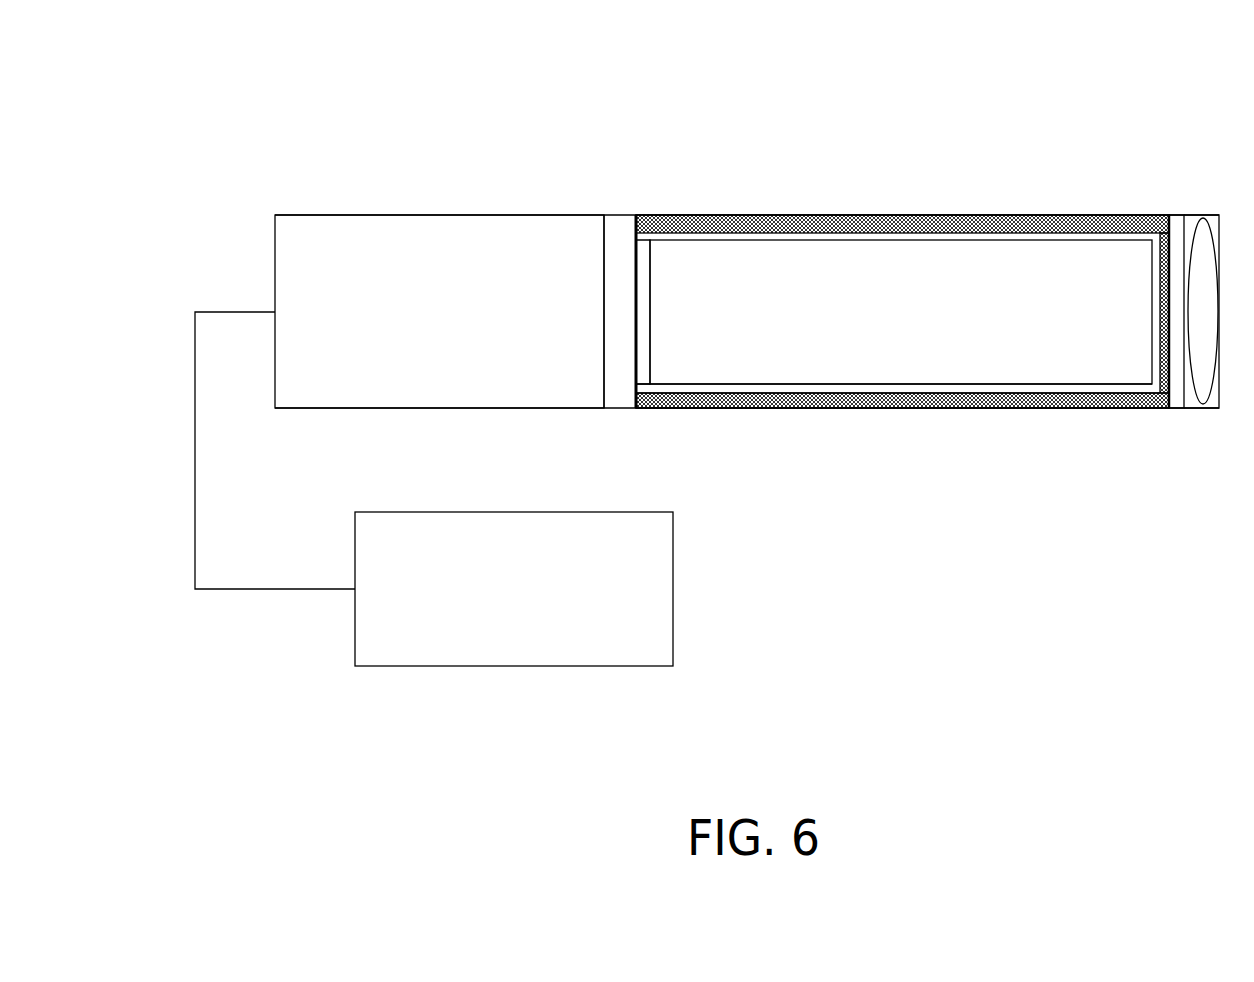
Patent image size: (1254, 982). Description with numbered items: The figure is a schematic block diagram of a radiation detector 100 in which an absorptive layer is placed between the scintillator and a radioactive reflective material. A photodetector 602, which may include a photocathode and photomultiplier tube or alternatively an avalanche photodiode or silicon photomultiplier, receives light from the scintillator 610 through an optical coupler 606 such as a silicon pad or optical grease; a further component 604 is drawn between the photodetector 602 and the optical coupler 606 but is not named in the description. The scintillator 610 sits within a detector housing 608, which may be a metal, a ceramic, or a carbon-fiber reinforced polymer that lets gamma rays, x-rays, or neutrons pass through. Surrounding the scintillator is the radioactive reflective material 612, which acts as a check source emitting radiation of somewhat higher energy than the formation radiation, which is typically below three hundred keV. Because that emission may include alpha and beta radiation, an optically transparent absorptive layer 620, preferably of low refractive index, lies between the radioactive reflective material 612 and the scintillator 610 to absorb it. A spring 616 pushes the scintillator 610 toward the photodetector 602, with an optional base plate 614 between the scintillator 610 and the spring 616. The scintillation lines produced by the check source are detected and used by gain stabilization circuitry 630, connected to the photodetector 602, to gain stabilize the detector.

The radiation detector 100 is at (402, 62).
The photodetector 602 is at (303, 215).
The optical window 604 is at (622, 400).
The optical coupler 606 is at (643, 302).
The detector housing 608 is at (1068, 221).
The scintillator 610 is at (828, 262).
The radioactive reflective material 612 is at (923, 222).
The base plate 614 is at (1180, 228).
The spring 616 is at (1203, 390).
The absorptive layer 620 is at (757, 390).
The gain stabilization circuitry 630 is at (463, 667).